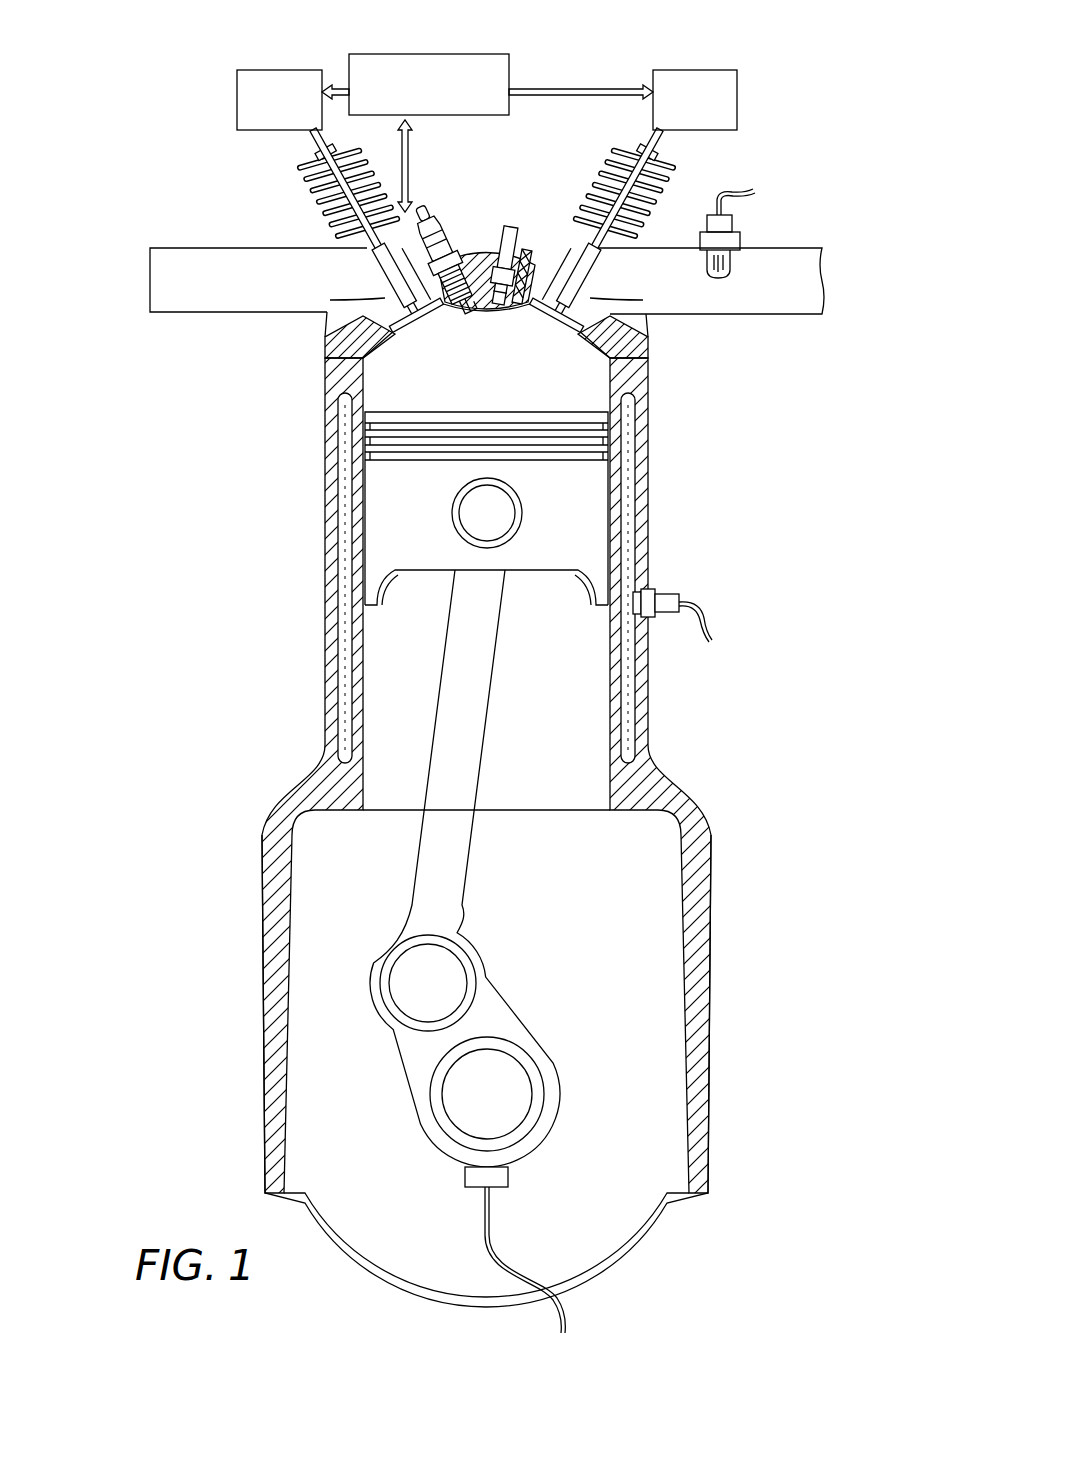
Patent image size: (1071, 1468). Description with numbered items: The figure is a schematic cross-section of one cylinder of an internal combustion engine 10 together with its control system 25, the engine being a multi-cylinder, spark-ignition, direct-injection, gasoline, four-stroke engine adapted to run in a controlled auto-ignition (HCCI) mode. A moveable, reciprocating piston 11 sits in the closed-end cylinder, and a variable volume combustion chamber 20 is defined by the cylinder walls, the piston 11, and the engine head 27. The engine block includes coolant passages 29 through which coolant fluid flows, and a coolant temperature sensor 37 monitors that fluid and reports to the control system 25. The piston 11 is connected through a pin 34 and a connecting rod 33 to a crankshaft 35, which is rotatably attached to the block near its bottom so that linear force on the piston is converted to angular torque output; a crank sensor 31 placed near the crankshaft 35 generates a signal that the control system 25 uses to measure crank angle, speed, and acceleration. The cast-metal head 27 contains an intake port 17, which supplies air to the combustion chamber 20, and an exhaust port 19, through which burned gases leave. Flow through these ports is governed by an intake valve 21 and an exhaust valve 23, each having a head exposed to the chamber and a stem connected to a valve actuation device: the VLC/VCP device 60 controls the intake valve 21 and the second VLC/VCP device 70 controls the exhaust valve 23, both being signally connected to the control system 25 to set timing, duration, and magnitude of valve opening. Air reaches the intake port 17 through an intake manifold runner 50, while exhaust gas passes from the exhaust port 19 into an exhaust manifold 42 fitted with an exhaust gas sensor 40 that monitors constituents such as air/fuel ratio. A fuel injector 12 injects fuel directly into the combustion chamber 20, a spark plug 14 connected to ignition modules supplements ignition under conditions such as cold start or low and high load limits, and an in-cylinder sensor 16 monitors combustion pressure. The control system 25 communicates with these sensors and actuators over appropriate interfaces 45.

The internal combustion engine 10 is at (172, 450).
The piston 11 is at (583, 520).
The fuel injector 12 is at (503, 247).
The spark plug 14 is at (437, 230).
The in-cylinder sensor 16 is at (528, 258).
The intake port 17 is at (378, 302).
The exhaust port 19 is at (598, 300).
The combustion chamber 20 is at (385, 388).
The intake valve 21 is at (385, 268).
The exhaust valve 23 is at (590, 288).
The control system 25 is at (505, 62).
The engine head 27 is at (638, 350).
The coolant passages 29 is at (630, 445).
The crank sensor 31 is at (462, 1178).
The connecting rod 33 is at (465, 675).
The pin 34 is at (478, 512).
The crankshaft 35 is at (432, 1093).
The coolant temperature sensor 37 is at (665, 595).
The exhaust gas sensor 40 is at (735, 245).
The exhaust manifold 42 is at (808, 280).
The interfaces 45 is at (415, 160).
The intake manifold runner 50 is at (220, 300).
The valve actuation device 60 is at (237, 78).
The second valve actuation device 70 is at (730, 80).